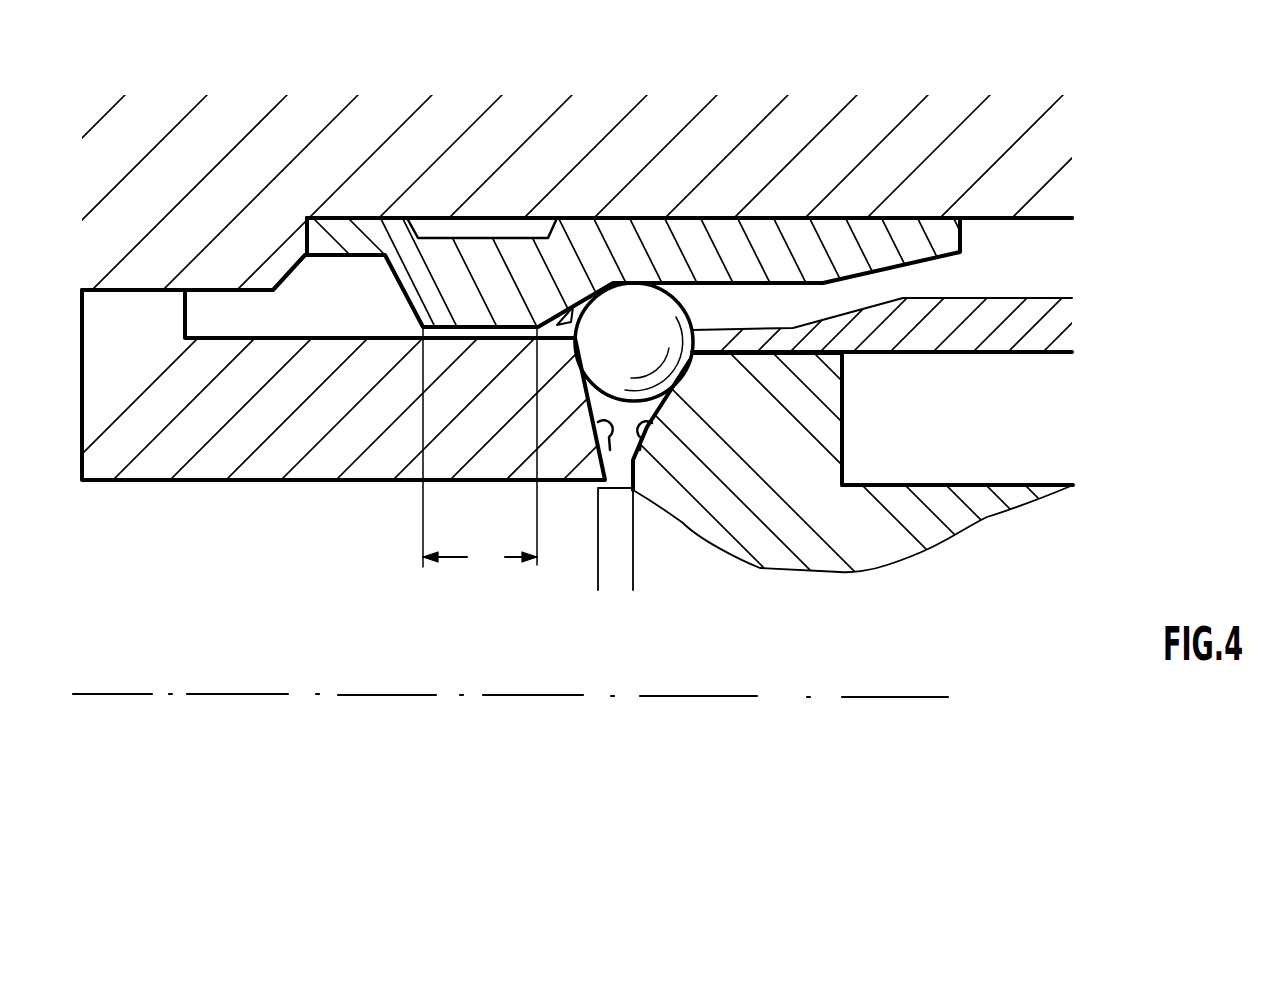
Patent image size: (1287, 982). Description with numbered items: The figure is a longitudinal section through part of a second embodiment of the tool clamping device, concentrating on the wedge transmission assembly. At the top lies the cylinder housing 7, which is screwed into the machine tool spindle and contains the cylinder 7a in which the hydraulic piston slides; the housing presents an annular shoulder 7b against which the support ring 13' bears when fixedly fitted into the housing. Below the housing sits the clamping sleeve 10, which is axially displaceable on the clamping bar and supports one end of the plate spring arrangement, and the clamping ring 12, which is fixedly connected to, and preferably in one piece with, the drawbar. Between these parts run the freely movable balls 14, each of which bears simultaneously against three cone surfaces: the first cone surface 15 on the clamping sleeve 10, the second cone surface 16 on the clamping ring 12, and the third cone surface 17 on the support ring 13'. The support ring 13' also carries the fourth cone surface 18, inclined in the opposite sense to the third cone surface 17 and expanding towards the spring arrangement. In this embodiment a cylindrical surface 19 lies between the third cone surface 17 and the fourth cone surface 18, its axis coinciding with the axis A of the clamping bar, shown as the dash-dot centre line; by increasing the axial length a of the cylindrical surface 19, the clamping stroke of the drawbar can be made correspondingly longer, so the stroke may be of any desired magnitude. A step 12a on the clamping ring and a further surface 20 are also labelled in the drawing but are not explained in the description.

The cylinder housing 7 is at (995, 128).
The cylinder 7a is at (1048, 220).
The annular shoulder 7b is at (307, 232).
The clamping sleeve 10 is at (282, 448).
The clamping ring 12 is at (762, 415).
The seat member step 12a is at (842, 428).
The support ring 13' is at (482, 134).
The balls 14 is at (645, 305).
The first cone surface 15 is at (600, 488).
The second cone surface 16 is at (643, 447).
The third cone surface 17 is at (566, 318).
The fourth cone surface 18 is at (392, 268).
The cylindrical surface 19 is at (483, 363).
The plate 20 is at (752, 334).
The axial length a is at (480, 451).
The axis A is at (887, 697).